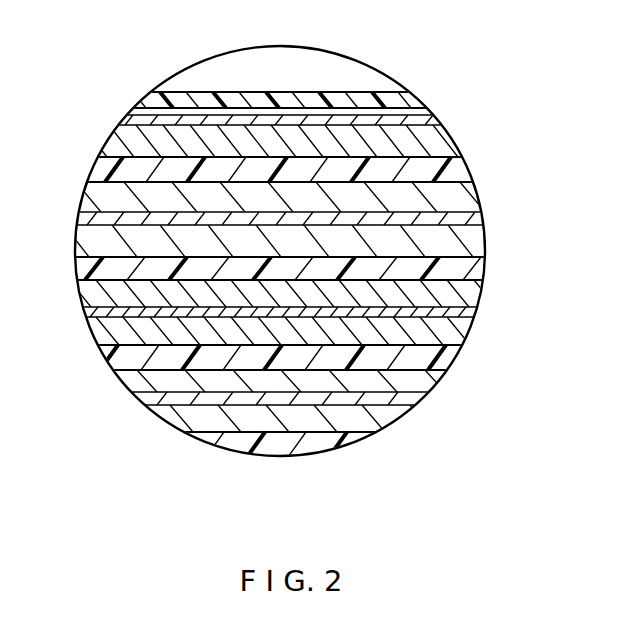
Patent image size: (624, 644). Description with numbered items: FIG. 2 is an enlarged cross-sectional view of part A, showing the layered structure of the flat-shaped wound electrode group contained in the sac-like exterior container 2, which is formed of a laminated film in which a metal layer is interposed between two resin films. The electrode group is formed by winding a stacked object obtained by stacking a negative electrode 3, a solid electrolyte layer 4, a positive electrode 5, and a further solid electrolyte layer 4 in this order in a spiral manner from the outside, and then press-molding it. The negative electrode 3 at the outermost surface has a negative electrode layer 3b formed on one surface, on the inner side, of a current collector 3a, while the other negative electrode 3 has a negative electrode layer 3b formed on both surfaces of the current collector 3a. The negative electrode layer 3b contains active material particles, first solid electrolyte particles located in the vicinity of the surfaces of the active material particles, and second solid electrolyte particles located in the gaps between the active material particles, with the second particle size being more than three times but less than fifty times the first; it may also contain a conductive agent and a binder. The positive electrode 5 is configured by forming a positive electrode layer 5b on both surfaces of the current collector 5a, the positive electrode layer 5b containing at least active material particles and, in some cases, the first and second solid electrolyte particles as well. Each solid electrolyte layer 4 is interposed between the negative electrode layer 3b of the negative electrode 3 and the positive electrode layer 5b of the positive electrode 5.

The part A is at (186, 78).
The exterior container 2 is at (405, 97).
The negative electrode 3 is at (532, 70).
The current collector 3a is at (430, 120).
The negative electrode layer 3b is at (435, 145).
The solid electrolyte layer 4 is at (104, 167).
The positive electrode 5 is at (568, 155).
The current collector 5a is at (461, 220).
The positive electrode layer 5b is at (459, 189).